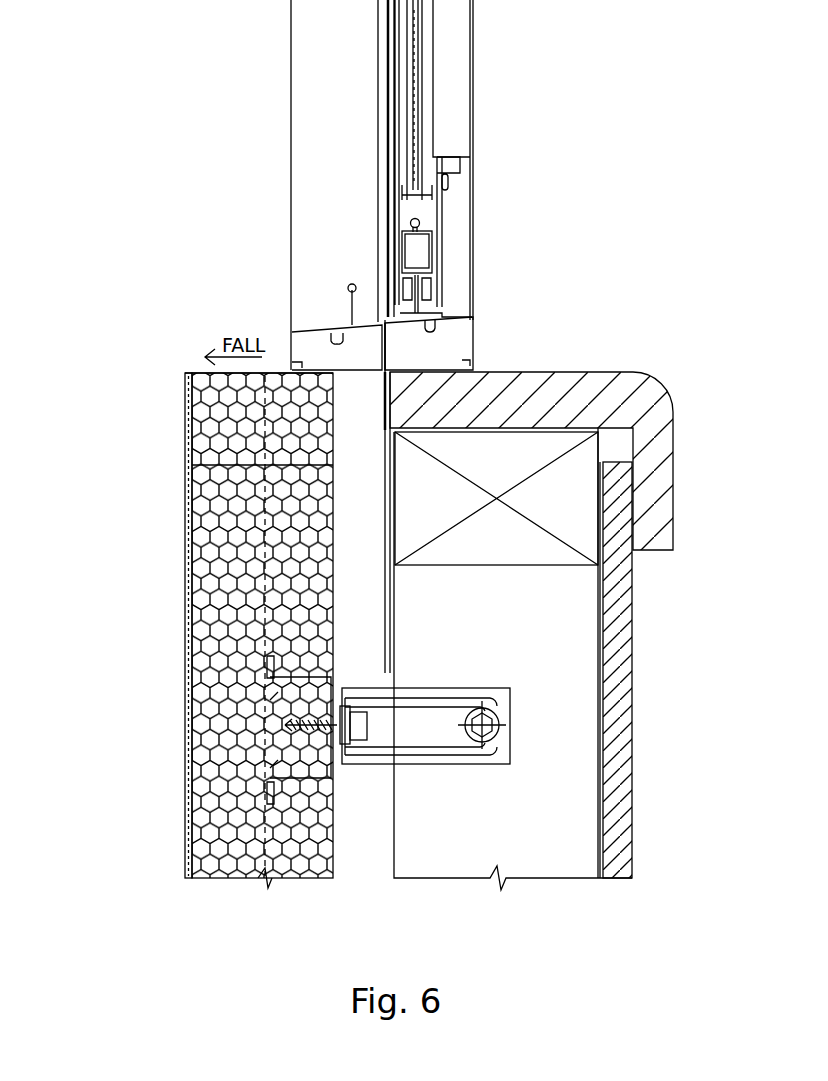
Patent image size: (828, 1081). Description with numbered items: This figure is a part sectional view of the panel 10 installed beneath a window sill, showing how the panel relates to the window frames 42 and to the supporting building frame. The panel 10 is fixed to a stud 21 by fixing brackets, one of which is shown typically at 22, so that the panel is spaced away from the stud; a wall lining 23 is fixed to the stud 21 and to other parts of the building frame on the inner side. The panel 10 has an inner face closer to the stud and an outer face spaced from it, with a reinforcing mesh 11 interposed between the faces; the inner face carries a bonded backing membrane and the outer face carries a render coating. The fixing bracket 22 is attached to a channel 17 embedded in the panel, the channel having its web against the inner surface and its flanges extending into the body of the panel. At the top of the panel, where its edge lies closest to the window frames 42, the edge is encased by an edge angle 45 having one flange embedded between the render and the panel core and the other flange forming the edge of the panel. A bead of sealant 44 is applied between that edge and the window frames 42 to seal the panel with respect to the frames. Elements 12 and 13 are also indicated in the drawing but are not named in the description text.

The panel 10 is at (195, 659).
The reinforcing mesh 11 is at (253, 586).
The membrane layer 12 is at (349, 580).
The outer facing skin 13 is at (176, 732).
The channel 17 is at (305, 835).
The stud 21 is at (557, 651).
The fixing brackets 22 is at (524, 730).
The wall lining 23 is at (646, 599).
The window frames 42 is at (319, 315).
The bead of sealant 44 is at (286, 356).
The edge angle 45 is at (196, 358).